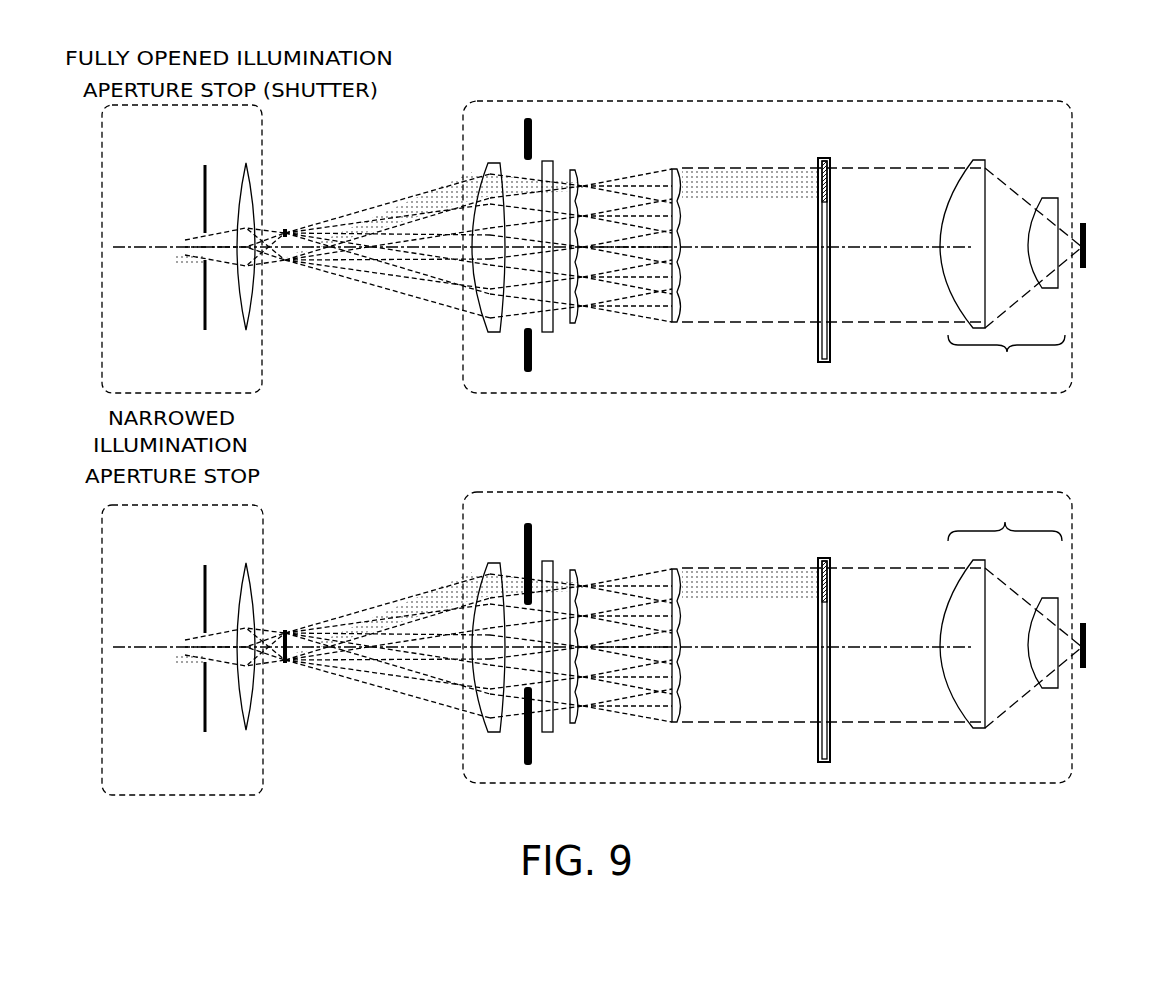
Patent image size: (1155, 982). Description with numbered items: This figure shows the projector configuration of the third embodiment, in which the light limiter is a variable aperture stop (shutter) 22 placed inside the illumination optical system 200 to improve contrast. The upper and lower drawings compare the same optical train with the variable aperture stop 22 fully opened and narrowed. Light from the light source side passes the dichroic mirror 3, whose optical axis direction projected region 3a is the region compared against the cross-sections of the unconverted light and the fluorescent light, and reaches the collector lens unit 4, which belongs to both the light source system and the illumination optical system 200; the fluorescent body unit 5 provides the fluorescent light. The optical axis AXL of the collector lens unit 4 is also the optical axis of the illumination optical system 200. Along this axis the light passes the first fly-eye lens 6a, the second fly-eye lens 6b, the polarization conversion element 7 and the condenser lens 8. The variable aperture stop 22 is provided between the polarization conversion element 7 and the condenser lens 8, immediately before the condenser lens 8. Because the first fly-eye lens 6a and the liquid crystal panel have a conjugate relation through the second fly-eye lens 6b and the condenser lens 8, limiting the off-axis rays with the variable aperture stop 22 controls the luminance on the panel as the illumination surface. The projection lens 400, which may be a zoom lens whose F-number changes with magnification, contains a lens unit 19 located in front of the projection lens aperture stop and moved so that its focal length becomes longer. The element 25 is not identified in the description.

The dichroic mirror 3 is at (826, 757).
The optical axis direction projected region of the dichroic mirror 3a is at (818, 573).
The collector lens unit 4 is at (948, 533).
The fluorescent body unit 5 is at (1085, 623).
The first fly-eye lens 6a is at (677, 570).
The second fly-eye lens 6b is at (577, 570).
The polarization conversion element 7 is at (548, 560).
The condenser lens 8 is at (487, 563).
The lens unit 19 is at (248, 313).
The variable aperture stop (shutter) 22 is at (526, 530).
The aperture plate 25 is at (205, 330).
The illumination optical system 200 is at (1067, 443).
The projection lens 400 is at (102, 507).
The optical axis AXL is at (756, 645).